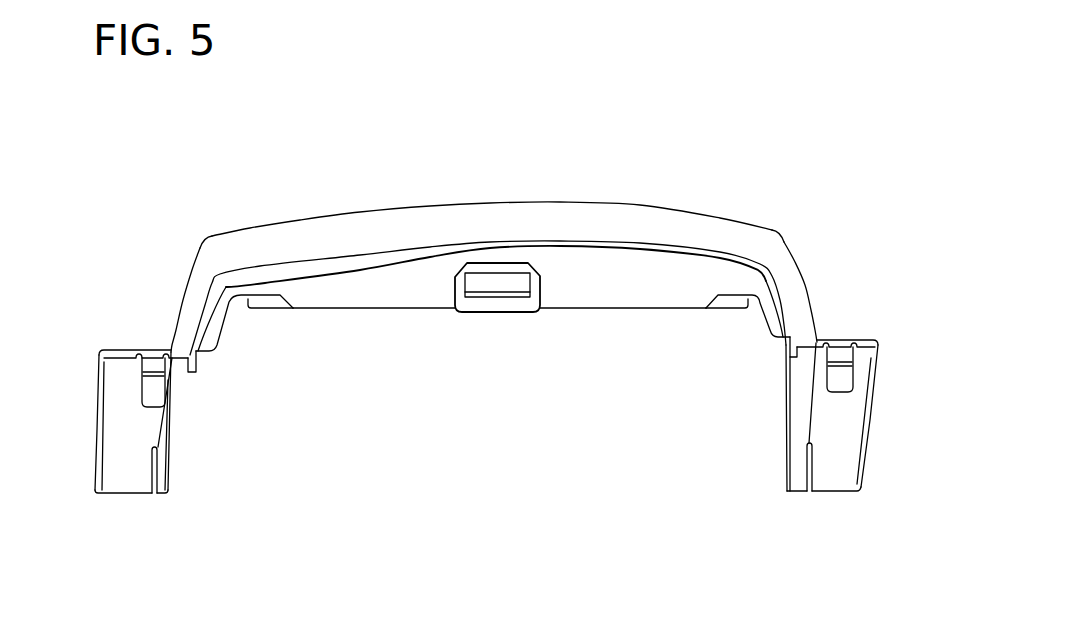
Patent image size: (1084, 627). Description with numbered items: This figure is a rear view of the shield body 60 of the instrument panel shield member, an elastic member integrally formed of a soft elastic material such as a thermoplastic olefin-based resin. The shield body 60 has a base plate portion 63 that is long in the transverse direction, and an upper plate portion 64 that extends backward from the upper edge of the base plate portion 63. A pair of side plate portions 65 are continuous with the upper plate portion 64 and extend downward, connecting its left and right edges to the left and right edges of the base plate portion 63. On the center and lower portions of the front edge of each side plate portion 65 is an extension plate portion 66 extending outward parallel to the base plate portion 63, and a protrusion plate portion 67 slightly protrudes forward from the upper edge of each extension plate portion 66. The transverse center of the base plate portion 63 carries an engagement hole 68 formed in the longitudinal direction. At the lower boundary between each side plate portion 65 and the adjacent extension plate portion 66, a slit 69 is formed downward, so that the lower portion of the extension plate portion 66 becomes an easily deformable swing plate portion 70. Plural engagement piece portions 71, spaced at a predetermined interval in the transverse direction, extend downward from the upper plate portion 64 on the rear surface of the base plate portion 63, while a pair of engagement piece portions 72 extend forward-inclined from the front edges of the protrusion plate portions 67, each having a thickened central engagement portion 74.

The shield body 60 is at (760, 208).
The base plate portion 63 is at (392, 283).
The upper plate portion 64 is at (447, 218).
The side plate portions 65 is at (172, 433).
The extension plate portions 66 is at (120, 420).
The protrusion plate portion 67 is at (125, 355).
The engagement hole 68 is at (490, 294).
The slit 69 is at (155, 470).
The swing plate portion 70 is at (128, 472).
The engagement piece portions 71 is at (270, 306).
The engagement piece portions 72 is at (157, 393).
The engagement portion 74 is at (153, 372).